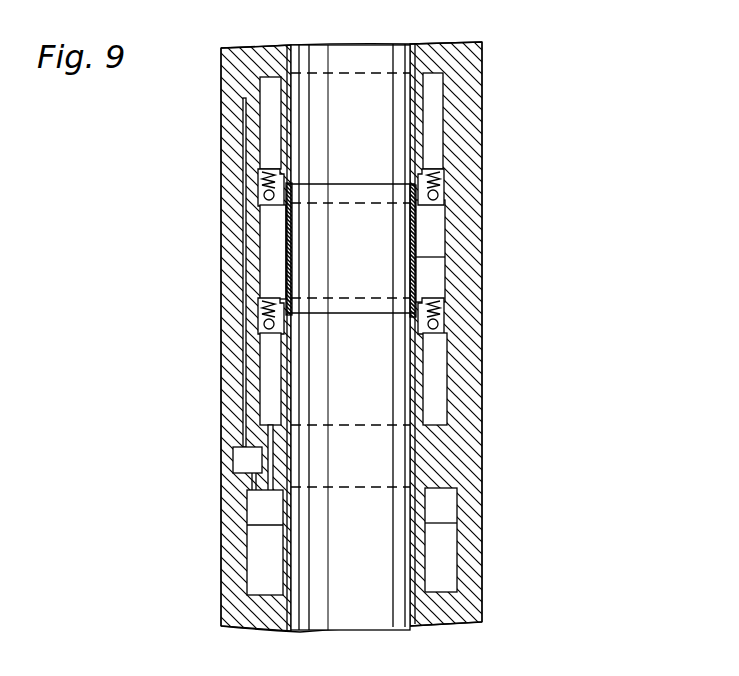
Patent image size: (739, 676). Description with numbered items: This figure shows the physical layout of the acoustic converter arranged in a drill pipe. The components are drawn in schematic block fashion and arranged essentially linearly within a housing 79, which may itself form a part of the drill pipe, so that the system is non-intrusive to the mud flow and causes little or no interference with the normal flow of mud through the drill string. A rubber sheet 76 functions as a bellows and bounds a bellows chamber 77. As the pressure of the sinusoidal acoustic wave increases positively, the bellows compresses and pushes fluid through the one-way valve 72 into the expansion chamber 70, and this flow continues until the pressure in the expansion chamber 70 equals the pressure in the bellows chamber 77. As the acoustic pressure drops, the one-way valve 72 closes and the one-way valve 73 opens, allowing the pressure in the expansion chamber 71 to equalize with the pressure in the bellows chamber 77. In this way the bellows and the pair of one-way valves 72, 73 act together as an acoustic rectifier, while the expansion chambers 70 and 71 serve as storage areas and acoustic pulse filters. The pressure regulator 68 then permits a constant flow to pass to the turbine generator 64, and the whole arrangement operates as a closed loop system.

The housing 79 is at (466, 60).
The expansion chamber 70 is at (271, 137).
The one-way valve 72 is at (265, 186).
The rubber sheet 76 is at (416, 233).
The bellows chamber 77 is at (433, 245).
The one-way valve 73 is at (256, 313).
The expansion chamber 71 is at (269, 383).
The regulator 68 is at (240, 462).
The turbine generator 64 is at (437, 543).